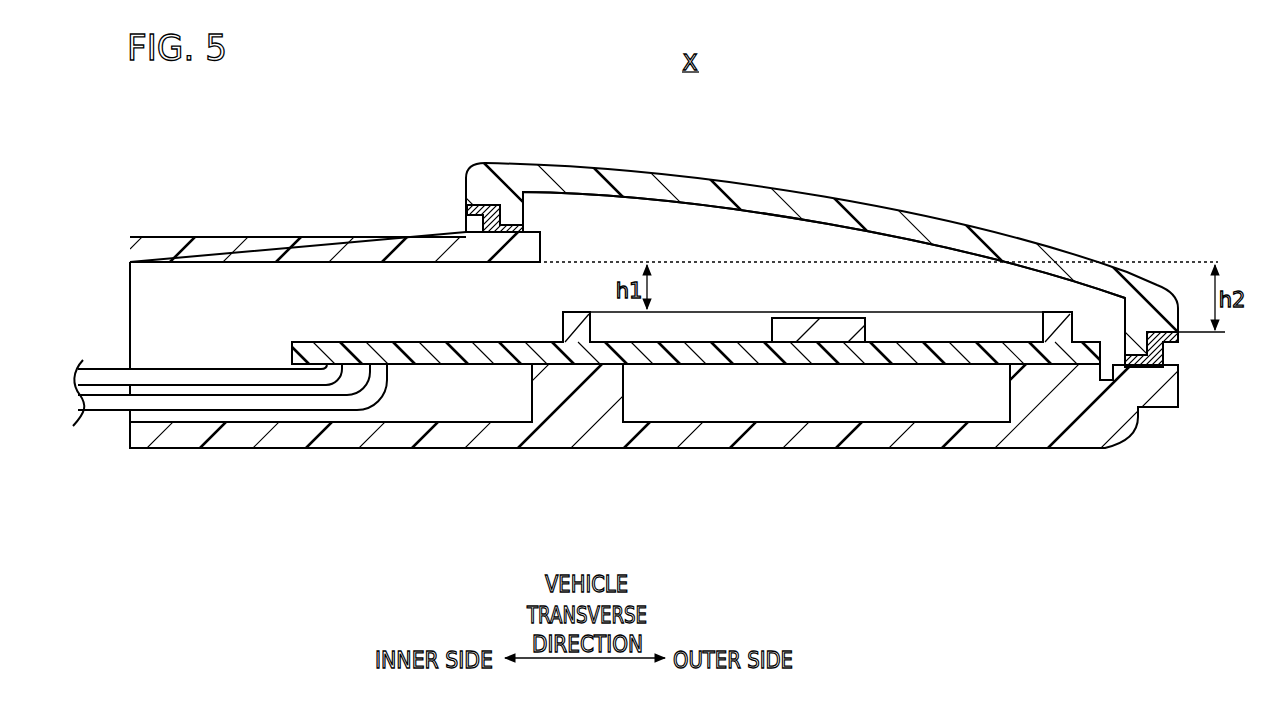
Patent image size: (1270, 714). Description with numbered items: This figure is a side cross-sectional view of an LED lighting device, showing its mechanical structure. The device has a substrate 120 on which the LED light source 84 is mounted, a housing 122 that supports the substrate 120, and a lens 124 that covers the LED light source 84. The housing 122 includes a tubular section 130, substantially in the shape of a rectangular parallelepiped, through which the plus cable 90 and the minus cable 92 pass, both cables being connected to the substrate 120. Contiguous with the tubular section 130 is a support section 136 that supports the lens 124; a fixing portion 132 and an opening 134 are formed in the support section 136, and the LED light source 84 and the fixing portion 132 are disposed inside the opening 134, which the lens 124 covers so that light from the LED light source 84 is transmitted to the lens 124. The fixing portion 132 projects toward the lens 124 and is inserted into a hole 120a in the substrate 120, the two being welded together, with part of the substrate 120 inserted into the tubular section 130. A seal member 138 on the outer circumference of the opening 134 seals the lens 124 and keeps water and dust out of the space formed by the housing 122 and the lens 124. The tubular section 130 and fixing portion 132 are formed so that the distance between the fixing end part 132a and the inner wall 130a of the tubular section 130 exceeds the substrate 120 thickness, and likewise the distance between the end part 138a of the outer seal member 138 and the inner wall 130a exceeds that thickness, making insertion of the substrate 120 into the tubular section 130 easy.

The LED light source 84 is at (822, 332).
The plus cable 90 is at (114, 368).
The minus cable 92 is at (113, 412).
The substrate 120 is at (462, 341).
The hole 120a is at (575, 352).
The housing 122 is at (503, 457).
The lens 124 is at (794, 190).
The tubular section 130 is at (243, 435).
The inner wall 130a is at (380, 263).
The fixing portion 132 is at (578, 323).
The fixing end part 132a is at (580, 309).
The opening 134 is at (682, 215).
The support section 136 is at (763, 436).
The seal member 138 is at (481, 205).
The end part 138a is at (1153, 330).